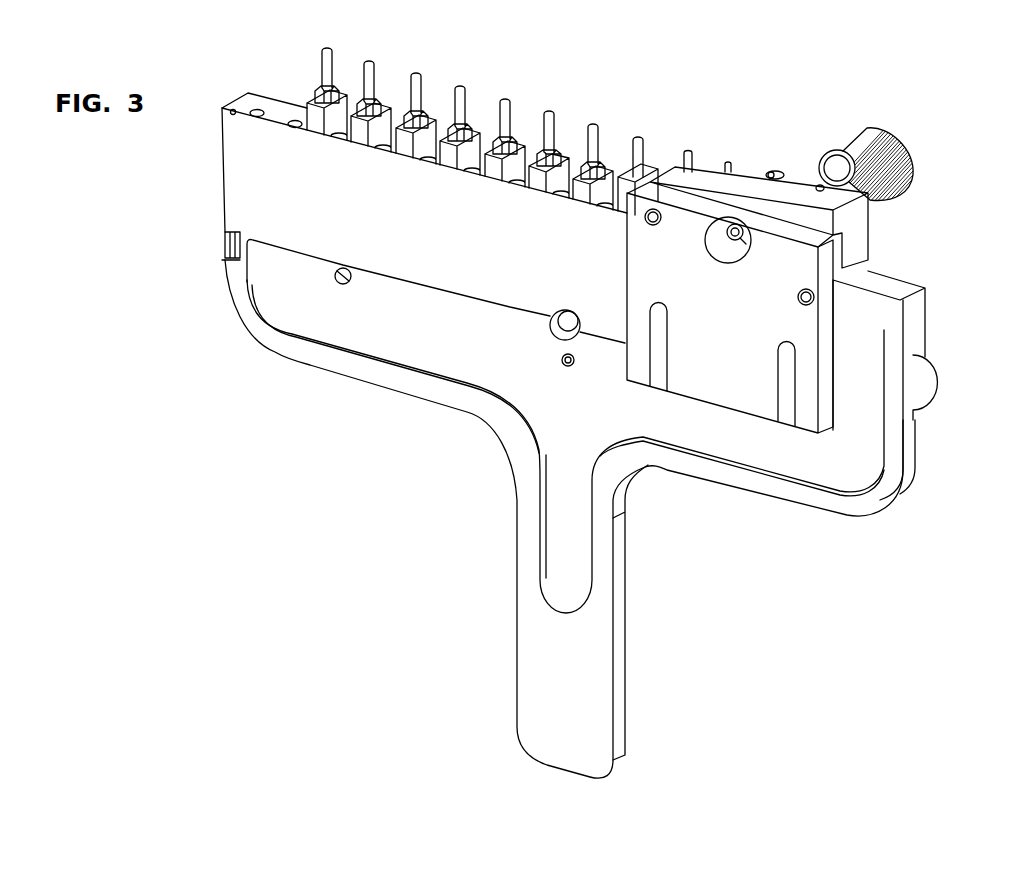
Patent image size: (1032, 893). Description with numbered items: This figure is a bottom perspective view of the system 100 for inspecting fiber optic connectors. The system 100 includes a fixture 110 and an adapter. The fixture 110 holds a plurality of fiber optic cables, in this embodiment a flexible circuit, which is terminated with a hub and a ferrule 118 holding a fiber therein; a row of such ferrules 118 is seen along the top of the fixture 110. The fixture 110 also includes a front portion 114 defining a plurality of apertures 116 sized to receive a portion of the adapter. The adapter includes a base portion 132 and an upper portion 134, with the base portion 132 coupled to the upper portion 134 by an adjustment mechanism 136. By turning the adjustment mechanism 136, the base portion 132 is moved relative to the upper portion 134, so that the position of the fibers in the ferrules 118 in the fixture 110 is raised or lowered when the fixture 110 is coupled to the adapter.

The system 100 is at (927, 82).
The fixture 110 is at (620, 707).
The front portion 114 is at (910, 315).
The apertures 116 is at (612, 213).
The ferrule 118 is at (552, 113).
The base portion 132 is at (745, 383).
The upper portion 134 is at (858, 245).
The adjustment mechanism 136 is at (890, 148).